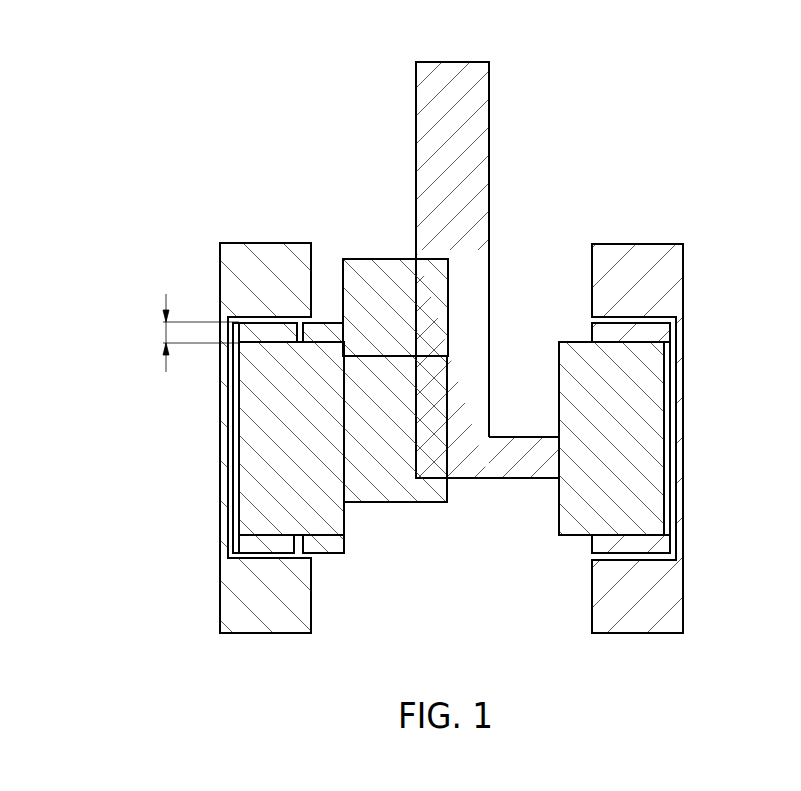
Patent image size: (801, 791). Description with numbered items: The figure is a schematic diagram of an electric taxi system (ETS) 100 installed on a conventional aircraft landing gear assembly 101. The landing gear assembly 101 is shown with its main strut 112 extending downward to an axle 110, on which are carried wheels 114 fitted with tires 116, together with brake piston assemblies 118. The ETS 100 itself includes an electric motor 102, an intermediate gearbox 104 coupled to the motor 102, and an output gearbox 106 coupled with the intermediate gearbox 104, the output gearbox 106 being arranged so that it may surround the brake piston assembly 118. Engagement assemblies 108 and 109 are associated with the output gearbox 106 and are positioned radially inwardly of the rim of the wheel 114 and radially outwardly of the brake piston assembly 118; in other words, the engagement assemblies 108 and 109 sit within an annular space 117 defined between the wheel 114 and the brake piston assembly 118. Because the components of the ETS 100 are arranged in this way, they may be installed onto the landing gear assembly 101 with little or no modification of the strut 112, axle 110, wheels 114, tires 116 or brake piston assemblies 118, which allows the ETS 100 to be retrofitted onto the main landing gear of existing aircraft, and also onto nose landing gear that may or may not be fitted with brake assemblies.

The electric taxi system 100 is at (352, 248).
The landing gear assembly 101 is at (490, 242).
The electric motor 102 is at (393, 258).
The intermediate gearbox 104 is at (407, 500).
The output gearbox 106 is at (337, 557).
The engagement assembly 108 is at (298, 325).
The engagement assembly 109 is at (300, 553).
The axle 110 is at (515, 437).
The main strut 112 is at (490, 133).
The wheel 114 is at (242, 543).
The tire 116 is at (218, 265).
The annular space 117 is at (165, 333).
The brake piston assembly 118 is at (242, 486).